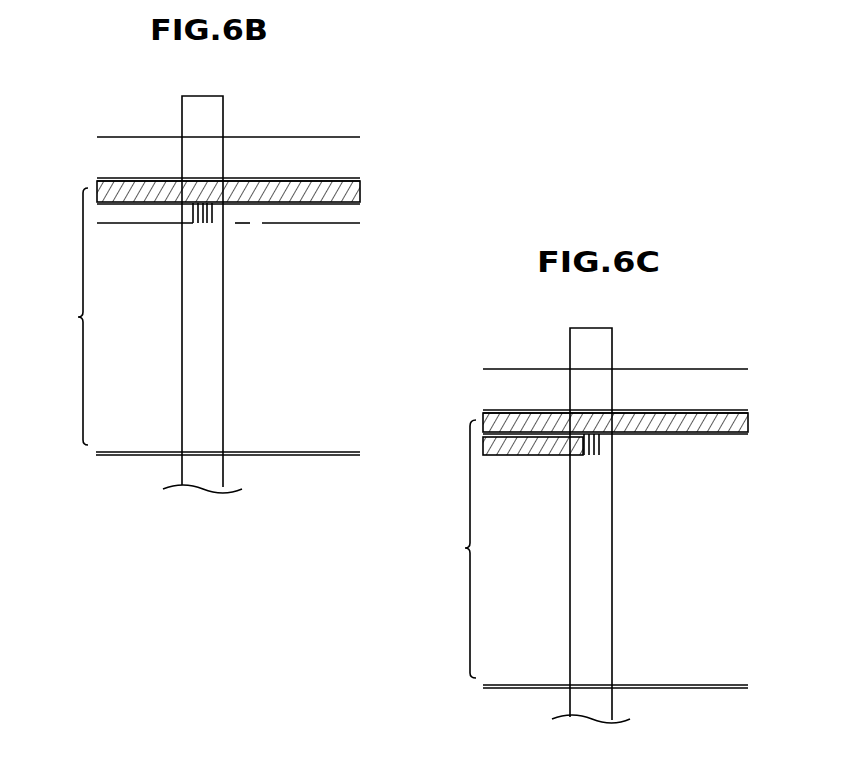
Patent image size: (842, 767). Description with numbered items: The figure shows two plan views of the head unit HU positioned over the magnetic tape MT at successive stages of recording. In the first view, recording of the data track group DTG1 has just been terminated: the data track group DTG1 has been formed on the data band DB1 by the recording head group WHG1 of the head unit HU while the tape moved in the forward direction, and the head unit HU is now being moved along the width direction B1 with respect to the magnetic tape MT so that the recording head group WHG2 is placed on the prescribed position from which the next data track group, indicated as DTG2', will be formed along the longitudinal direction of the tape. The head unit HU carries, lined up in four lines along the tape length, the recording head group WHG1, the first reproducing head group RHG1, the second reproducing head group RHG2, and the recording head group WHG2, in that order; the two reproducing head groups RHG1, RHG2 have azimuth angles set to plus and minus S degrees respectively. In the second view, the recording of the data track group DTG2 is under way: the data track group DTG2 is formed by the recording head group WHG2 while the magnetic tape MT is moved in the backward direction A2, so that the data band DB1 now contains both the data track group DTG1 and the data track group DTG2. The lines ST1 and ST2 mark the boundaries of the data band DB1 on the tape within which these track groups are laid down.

In FIG. 6B, the head unit HU is at (215, 118).
In FIG. 6C, the head unit HU is at (602, 350).
In FIG. 6B, the magnetic tape MT is at (298, 134).
In FIG. 6C, the magnetic tape MT is at (686, 366).
In FIG. 6B, the width direction B1 is at (167, 112).
In FIG. 6C, the backward direction A2 is at (505, 358).
In FIG. 6B, the first surface ST1 is at (199, 174).
In FIG. 6C, the first surface ST1 is at (586, 405).
In FIG. 6B, the second surface ST2 is at (199, 462).
In FIG. 6C, the second surface ST2 is at (586, 694).
In FIG. 6B, the data track group DTG1 is at (355, 193).
In FIG. 6C, the data track group DTG1 is at (737, 428).
In FIG. 6C, the data track group DTG2 is at (530, 476).
In FIG. 6B, the second dot group (shifted) DTG2' is at (271, 215).
In FIG. 6B, the recording head group WHG1 is at (193, 223).
In FIG. 6C, the recording head group WHG1 is at (583, 457).
In FIG. 6B, the recording head group WHG2 is at (212, 225).
In FIG. 6C, the recording head group WHG2 is at (592, 457).
In FIG. 6B, the first reproducing head group RHG1 is at (203, 223).
In FIG. 6C, the first reproducing head group RHG1 is at (588, 457).
In FIG. 6B, the second reproducing head group RHG2 is at (207, 223).
In FIG. 6C, the second reproducing head group RHG2 is at (597, 457).
In FIG. 6B, the data band DB1 is at (55, 316).
In FIG. 6C, the data band DB1 is at (443, 549).